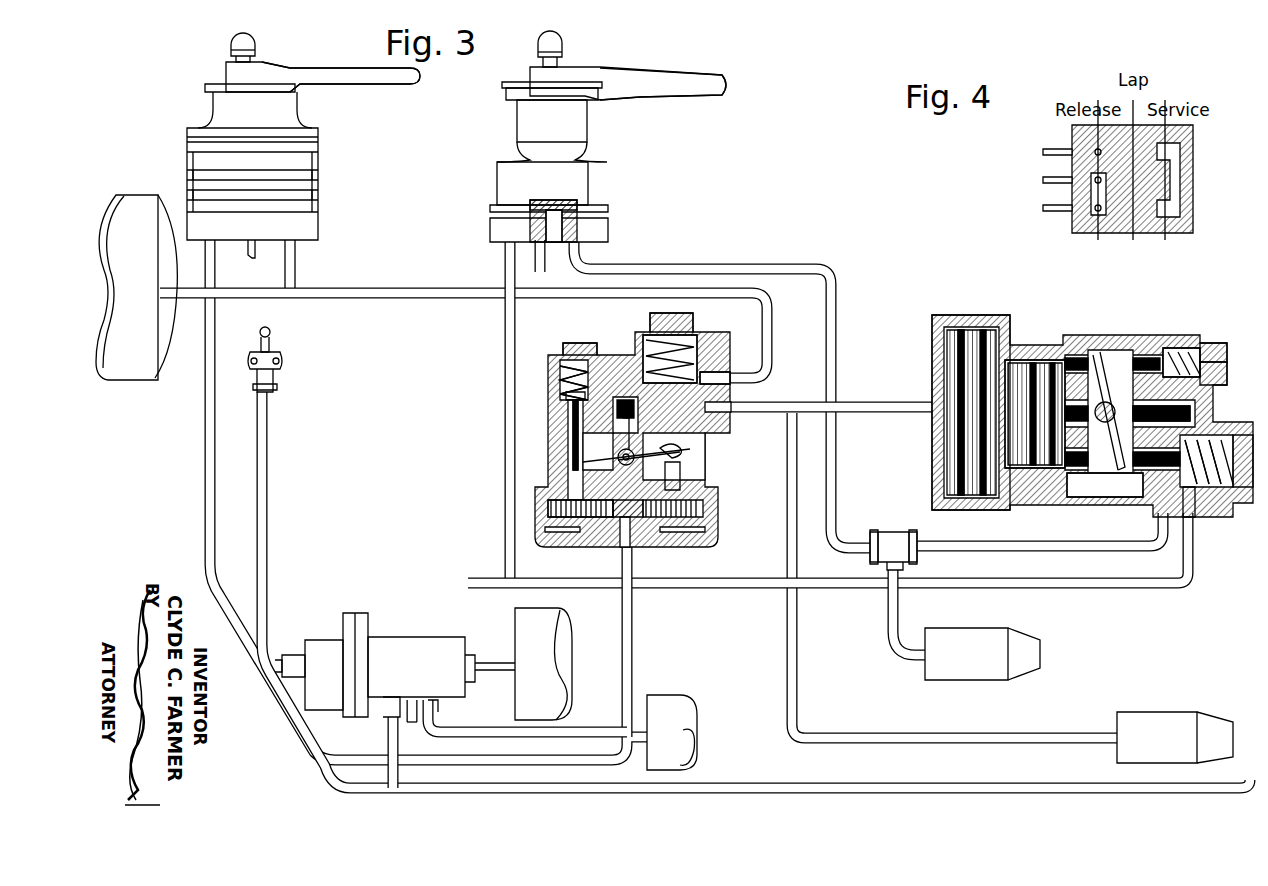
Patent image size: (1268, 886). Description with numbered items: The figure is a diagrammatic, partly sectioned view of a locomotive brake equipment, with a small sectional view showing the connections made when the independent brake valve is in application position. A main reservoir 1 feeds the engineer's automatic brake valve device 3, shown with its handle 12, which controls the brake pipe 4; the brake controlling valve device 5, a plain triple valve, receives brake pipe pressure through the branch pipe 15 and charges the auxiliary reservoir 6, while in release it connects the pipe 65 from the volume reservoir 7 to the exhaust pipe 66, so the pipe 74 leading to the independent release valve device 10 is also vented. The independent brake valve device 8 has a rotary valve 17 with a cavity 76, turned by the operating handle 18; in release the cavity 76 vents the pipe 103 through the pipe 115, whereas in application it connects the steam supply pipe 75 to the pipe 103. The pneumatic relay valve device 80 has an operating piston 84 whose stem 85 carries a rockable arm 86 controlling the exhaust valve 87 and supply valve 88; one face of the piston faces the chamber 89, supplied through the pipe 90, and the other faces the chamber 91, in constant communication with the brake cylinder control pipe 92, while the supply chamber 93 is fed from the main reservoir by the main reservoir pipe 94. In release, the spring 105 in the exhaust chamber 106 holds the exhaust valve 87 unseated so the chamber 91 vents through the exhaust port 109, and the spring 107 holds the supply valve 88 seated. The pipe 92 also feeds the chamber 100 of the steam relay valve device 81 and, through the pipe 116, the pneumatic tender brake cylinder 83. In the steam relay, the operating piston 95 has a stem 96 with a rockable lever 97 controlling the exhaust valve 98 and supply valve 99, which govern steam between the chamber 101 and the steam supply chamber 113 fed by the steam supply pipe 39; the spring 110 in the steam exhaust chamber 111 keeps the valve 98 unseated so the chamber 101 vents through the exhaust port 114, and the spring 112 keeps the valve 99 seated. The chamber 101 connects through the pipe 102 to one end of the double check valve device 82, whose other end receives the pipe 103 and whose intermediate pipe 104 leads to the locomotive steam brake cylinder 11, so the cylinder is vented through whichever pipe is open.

In FIG. 3, the main reservoir 1 is at (154, 186).
In FIG. 3, the engineer's brake valve device 3 is at (326, 166).
In FIG. 3, the brake pipe 4 is at (214, 549).
In FIG. 3, the brake controlling valve device 5 is at (355, 606).
In FIG. 3, the auxiliary reservoir 6 is at (562, 640).
In FIG. 3, the volume reservoir 7 is at (688, 710).
In FIG. 3, the independent brake valve device 8 is at (596, 178).
In FIG. 3, the independent release valve device 10 is at (282, 355).
In FIG. 3, the locomotive steam brake cylinder 11 is at (962, 630).
In FIG. 3, the feed valve handle 12 is at (386, 84).
In FIG. 3, the brake pipe branch pipe 15 is at (389, 740).
In FIG. 3, the rotary valve 17 is at (553, 200).
In FIG. 3, the operating handle 18 is at (707, 92).
In FIG. 3, the steam supply pipe 39 is at (700, 590).
In FIG. 3, the pipe 65 is at (583, 730).
In FIG. 3, the exhaust pipe 66 is at (414, 724).
In FIG. 3, the pipe 74 is at (267, 530).
In FIG. 3, the steam supply pipe 75 is at (504, 460).
In FIG. 4, the steam supply pipe 75 is at (1042, 152).
In FIG. 3, the cavity 76 is at (566, 212).
In FIG. 3, the pneumatic relay valve device 80 is at (727, 494).
In FIG. 3, the steam relay valve device 81 is at (1001, 315).
In FIG. 3, the double check valve device 82 is at (905, 536).
In FIG. 3, the pneumatic tender brake cylinder 83 is at (1160, 714).
In FIG. 3, the operating piston 84 is at (717, 520).
In FIG. 3, the piston stem 85 is at (635, 455).
In FIG. 3, the rockable arm 86 is at (690, 451).
In FIG. 3, the exhaust valve 87 is at (568, 425).
In FIG. 3, the supply valve 88 is at (722, 375).
In FIG. 3, the chamber 89 is at (583, 530).
In FIG. 3, the pipe 90 is at (633, 560).
In FIG. 3, the chamber 91 is at (705, 472).
In FIG. 3, the brake cylinder control pipe 92 is at (800, 403).
In FIG. 3, the supply chamber 93 is at (695, 340).
In FIG. 3, the main reservoir pipe 94 is at (482, 299).
In FIG. 3, the operating piston 95 is at (960, 440).
In FIG. 3, the piston stem 96 is at (1045, 360).
In FIG. 3, the rockable lever 97 is at (1106, 355).
In FIG. 3, the exhaust valve 98 is at (1145, 365).
In FIG. 3, the supply valve 99 is at (1190, 518).
In FIG. 3, the chamber 100 is at (931, 360).
In FIG. 3, the chamber 101 is at (1110, 482).
In FIG. 3, the pipe 102 is at (990, 550).
In FIG. 3, the pipe 103 is at (837, 490).
In FIG. 4, the pipe 103 is at (1042, 208).
In FIG. 3, the pipe 104 is at (897, 617).
In FIG. 3, the spring 105 is at (575, 352).
In FIG. 3, the exhaust chamber 106 is at (584, 362).
In FIG. 3, the spring 107 is at (650, 355).
In FIG. 3, the exhaust port 109 is at (565, 390).
In FIG. 3, the spring 110 is at (1227, 354).
In FIG. 3, the steam exhaust chamber 111 is at (1227, 370).
In FIG. 3, the spring 112 is at (1232, 504).
In FIG. 3, the steam supply chamber 113 is at (1220, 518).
In FIG. 3, the exhaust port 114 is at (1180, 345).
In FIG. 3, the pipe 115 is at (537, 228).
In FIG. 4, the pipe 115 is at (1042, 180).
In FIG. 3, the pipe 116 is at (798, 680).